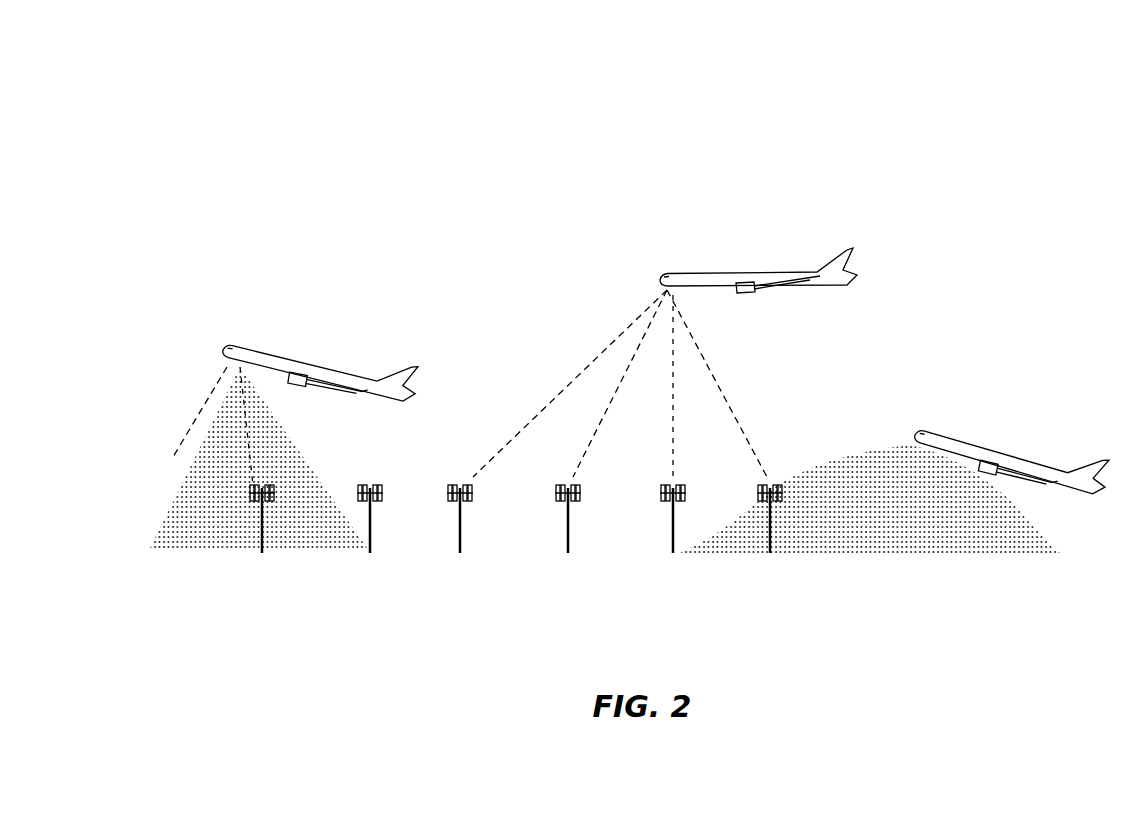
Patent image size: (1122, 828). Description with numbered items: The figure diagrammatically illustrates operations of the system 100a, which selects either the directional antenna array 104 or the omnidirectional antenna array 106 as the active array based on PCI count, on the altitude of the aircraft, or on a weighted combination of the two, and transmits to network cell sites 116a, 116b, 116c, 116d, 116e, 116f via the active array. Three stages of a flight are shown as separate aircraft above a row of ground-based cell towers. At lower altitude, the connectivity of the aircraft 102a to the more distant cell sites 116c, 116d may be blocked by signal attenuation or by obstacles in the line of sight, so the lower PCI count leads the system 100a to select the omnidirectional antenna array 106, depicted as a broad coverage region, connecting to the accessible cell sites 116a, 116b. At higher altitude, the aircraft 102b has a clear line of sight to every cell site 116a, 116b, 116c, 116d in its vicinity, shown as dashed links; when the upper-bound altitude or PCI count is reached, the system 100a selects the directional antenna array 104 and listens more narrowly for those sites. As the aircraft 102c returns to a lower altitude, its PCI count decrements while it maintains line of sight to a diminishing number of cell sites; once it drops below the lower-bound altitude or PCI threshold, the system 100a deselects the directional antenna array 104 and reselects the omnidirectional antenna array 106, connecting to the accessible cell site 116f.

The system 100a is at (189, 106).
The aircraft 102a is at (1013, 453).
The aircraft 102b is at (707, 270).
The aircraft 102c is at (281, 352).
The directional antenna array 104 is at (202, 403).
The omnidirectional antenna array 106 is at (313, 472).
The network cell site 116a is at (773, 520).
The network cell site 116b is at (676, 520).
The network cell site 116c is at (571, 520).
The network cell site 116d is at (463, 520).
The network cell site 116e is at (373, 520).
The network cell site 116f is at (265, 520).